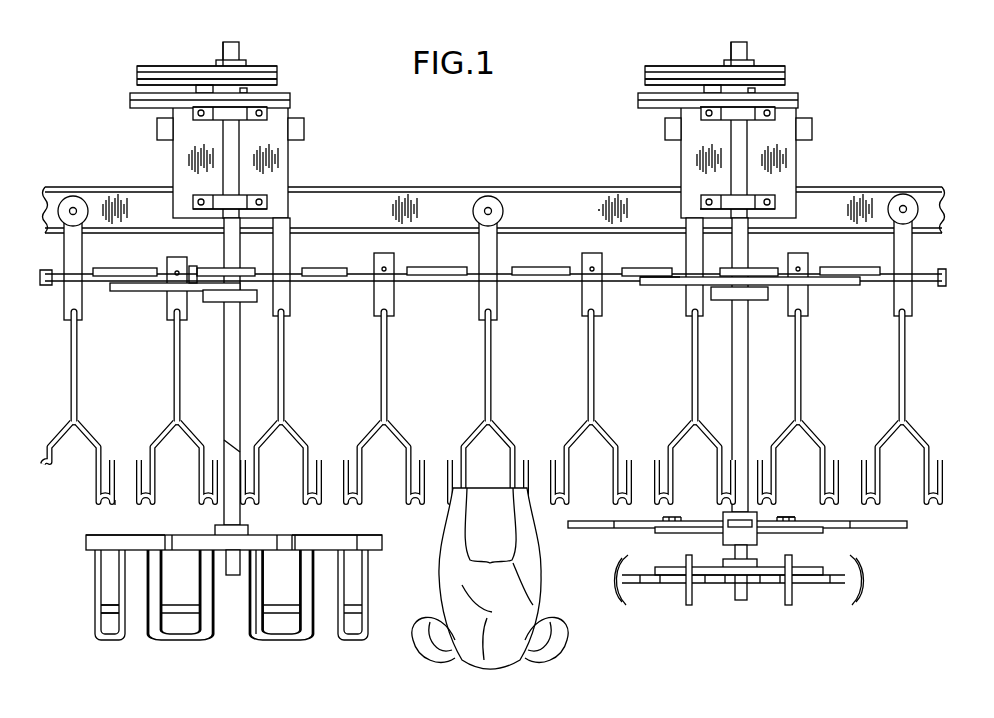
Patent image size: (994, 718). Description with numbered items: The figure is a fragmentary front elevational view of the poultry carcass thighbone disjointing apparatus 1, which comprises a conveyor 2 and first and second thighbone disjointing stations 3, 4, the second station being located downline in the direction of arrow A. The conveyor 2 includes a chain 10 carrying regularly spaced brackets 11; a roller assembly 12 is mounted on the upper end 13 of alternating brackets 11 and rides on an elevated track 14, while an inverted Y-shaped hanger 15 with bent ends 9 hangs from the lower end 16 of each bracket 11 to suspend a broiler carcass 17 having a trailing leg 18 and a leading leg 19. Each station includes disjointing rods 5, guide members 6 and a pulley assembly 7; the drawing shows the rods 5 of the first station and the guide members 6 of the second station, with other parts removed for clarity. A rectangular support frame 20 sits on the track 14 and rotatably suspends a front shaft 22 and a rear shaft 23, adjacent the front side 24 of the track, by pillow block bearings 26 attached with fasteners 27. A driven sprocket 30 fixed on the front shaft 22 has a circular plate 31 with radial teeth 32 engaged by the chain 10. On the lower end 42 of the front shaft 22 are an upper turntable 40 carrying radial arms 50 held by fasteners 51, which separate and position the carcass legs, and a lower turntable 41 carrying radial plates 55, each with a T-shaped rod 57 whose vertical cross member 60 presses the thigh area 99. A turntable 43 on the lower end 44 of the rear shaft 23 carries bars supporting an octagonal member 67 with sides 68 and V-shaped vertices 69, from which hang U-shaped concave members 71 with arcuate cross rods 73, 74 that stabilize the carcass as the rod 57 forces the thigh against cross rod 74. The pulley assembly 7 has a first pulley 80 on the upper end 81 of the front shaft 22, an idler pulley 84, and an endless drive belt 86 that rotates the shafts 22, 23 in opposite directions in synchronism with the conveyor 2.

The poultry carcass thighbone disjointing apparatus 1 is at (523, 127).
The conveyor 2 is at (90, 38).
The first thighbone disjointing station 3 is at (72, 513).
The second thighbone disjointing station 4 is at (202, 646).
The disjointing rods 5 is at (858, 596).
The guide members 6 is at (258, 535).
The pulley assembly 7 is at (273, 53).
The bent ends 9 is at (424, 508).
The chain 10 is at (433, 284).
The brackets 11 is at (168, 300).
The roller assembly 12 is at (61, 200).
The upper end 13 is at (83, 251).
The elevated track 14 is at (416, 189).
The hanger 15 is at (79, 386).
The lower end 16 is at (290, 305).
The broiler carcass 17 is at (483, 652).
The trailing leg 18 is at (518, 541).
The leading leg 19 is at (450, 545).
The support frame 20 is at (274, 160).
The front shaft 22 is at (238, 376).
The rear shaft 23 is at (229, 450).
The front side 24 is at (592, 210).
The pillow block bearings 26 is at (203, 197).
The fasteners 27 is at (260, 112).
The driven sprocket 30 is at (122, 288).
The circular plate 31 is at (672, 284).
The teeth 32 is at (192, 269).
The upper turntable 40 is at (684, 534).
The lower turntable 41 is at (793, 571).
The lower end 42 is at (741, 597).
The turntable 43 is at (202, 546).
The lower end 44 is at (233, 572).
The arms 50 is at (593, 529).
The fasteners 51 is at (790, 517).
The plates 55 is at (670, 585).
The T-shaped rod 57 is at (842, 580).
The cross member 60 is at (618, 588).
The octagonal-shaped member 67 is at (137, 536).
The sides 68 is at (322, 543).
The vertices 69 is at (283, 546).
The concave member 71 is at (107, 640).
The cross rod 73 is at (350, 640).
The cross rod 74 is at (110, 611).
The first pulley 80 is at (268, 86).
The upper end 81 is at (232, 54).
The idler pulley 84 is at (166, 75).
The endless drive belt 86 is at (142, 80).
The thigh area 99 is at (536, 578).
The arrow A is at (463, 374).